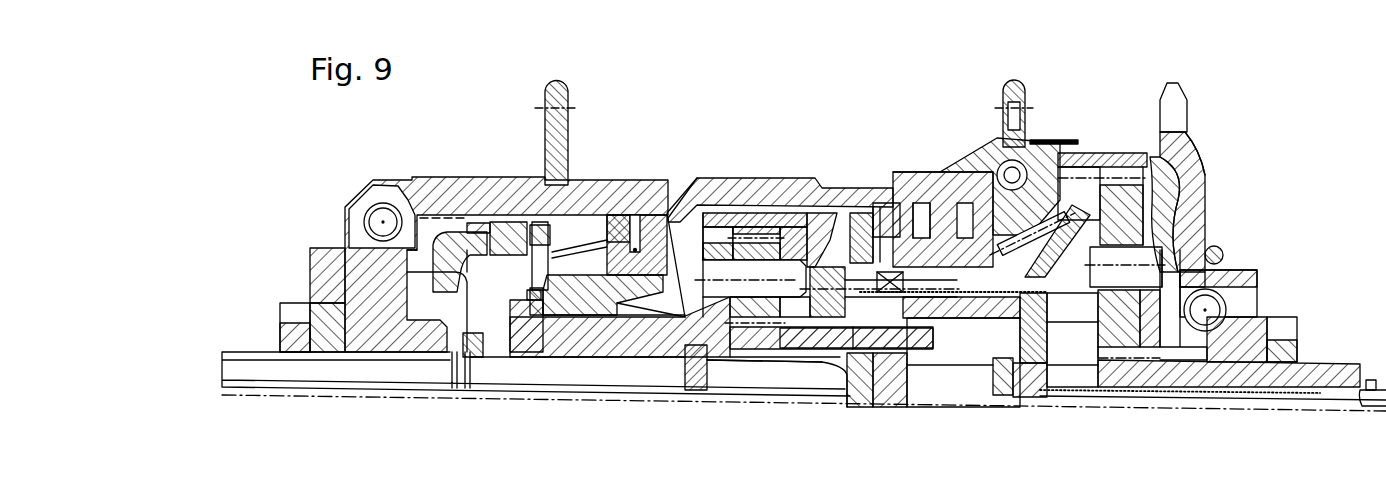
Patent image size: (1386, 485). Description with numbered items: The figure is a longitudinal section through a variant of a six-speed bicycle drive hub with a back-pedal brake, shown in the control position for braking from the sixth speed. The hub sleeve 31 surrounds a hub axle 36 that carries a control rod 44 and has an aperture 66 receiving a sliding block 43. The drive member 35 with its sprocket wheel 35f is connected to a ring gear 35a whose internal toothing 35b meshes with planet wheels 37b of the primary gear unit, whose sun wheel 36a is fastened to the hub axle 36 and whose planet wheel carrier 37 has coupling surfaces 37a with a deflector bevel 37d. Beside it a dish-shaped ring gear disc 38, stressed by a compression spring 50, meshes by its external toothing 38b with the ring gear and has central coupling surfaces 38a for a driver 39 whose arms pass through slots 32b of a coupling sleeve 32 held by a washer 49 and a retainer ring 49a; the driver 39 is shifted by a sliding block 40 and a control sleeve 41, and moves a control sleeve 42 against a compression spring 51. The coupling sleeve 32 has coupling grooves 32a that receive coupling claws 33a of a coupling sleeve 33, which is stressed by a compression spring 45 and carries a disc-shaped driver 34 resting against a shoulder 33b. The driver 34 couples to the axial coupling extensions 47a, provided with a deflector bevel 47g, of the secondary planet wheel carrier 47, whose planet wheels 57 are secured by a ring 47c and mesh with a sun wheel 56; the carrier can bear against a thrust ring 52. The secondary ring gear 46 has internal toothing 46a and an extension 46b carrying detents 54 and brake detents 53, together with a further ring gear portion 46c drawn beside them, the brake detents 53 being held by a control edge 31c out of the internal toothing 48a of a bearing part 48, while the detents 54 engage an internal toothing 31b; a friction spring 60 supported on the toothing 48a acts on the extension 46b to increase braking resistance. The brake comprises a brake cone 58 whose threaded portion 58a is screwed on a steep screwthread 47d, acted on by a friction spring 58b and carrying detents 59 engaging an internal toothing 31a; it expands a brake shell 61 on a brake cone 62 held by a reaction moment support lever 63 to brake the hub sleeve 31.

The hub sleeve 31 is at (767, 183).
The internal toothing 31a is at (633, 247).
The internal toothing 31b is at (820, 207).
The control edge 31c is at (902, 193).
The coupling sleeve 32 is at (980, 313).
The coupling grooves 32a is at (942, 327).
The slots 32b is at (1107, 363).
The coupling sleeve 33 is at (863, 357).
The coupling claws 33a is at (840, 353).
The shoulder 33b is at (723, 360).
The driver 34 is at (777, 357).
The drive member 35 is at (1243, 276).
The ring gear 35a is at (1143, 160).
The internal toothing 35b is at (1140, 270).
The sprocket wheel 35f is at (1200, 170).
The hub axle 36 is at (1310, 380).
The sun wheel 36a is at (1167, 393).
The planet wheel carrier 37 is at (1180, 357).
The coupling surfaces 37a is at (1187, 237).
The planet wheels 37b is at (1225, 252).
The deflector bevel 37d is at (1200, 217).
The ring gear disc 38 is at (1142, 160).
The coupling surfaces 38a is at (1143, 212).
The external toothing 38b is at (1117, 173).
The driver 39 is at (1083, 313).
The sliding block 40 is at (1040, 347).
The control sleeve 41 is at (1373, 381).
The control sleeve 42 is at (957, 297).
The sliding block 43 is at (875, 370).
The control rod 44 is at (1377, 403).
The compression spring 45 is at (737, 360).
The ring gear 46 is at (723, 220).
The internal toothing 46a is at (703, 257).
The extension 46b is at (920, 260).
The sleeve pin 46c is at (873, 240).
The planet wheel carrier 47 is at (533, 363).
The coupling extensions 47a is at (830, 237).
The ring 47c is at (668, 250).
The steep screwthread 47d is at (545, 350).
The deflector bevel 47g is at (807, 353).
The bearing part 48 is at (1050, 160).
The internal toothing 48a is at (1057, 143).
The washer 49 is at (1030, 370).
The retainer ring 49a is at (995, 360).
The compression spring 50 is at (1190, 163).
The compression spring 51 is at (860, 350).
The thrust ring 52 is at (677, 357).
The detents 53 is at (977, 187).
The detents 54 is at (857, 200).
The sun wheel 56 is at (690, 358).
The planet wheels 57 is at (750, 257).
The brake cone 58 is at (573, 272).
The threaded portion 58a is at (530, 350).
The friction spring 58b is at (530, 250).
The detents 59 is at (622, 245).
The friction spring 60 is at (1007, 173).
The brake shell 61 is at (540, 252).
The brake cone 62 is at (342, 282).
The reaction moment support lever 63 is at (310, 312).
The aperture 66 is at (980, 387).